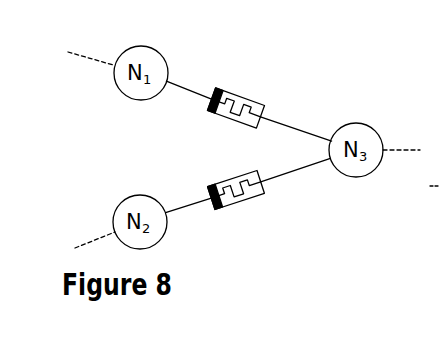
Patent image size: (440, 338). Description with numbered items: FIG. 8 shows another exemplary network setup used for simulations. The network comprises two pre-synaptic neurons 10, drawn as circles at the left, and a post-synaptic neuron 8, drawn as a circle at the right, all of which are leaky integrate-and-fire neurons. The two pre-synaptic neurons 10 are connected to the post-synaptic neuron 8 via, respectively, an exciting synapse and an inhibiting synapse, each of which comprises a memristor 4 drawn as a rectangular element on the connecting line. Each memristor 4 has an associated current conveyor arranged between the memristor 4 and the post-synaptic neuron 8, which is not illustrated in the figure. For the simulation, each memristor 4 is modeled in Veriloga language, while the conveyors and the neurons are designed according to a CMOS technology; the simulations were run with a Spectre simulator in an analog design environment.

The memristor 4 is at (219, 137).
The post-synaptic neuron 8 is at (408, 154).
The pre-synaptic neurons 10 is at (95, 150).